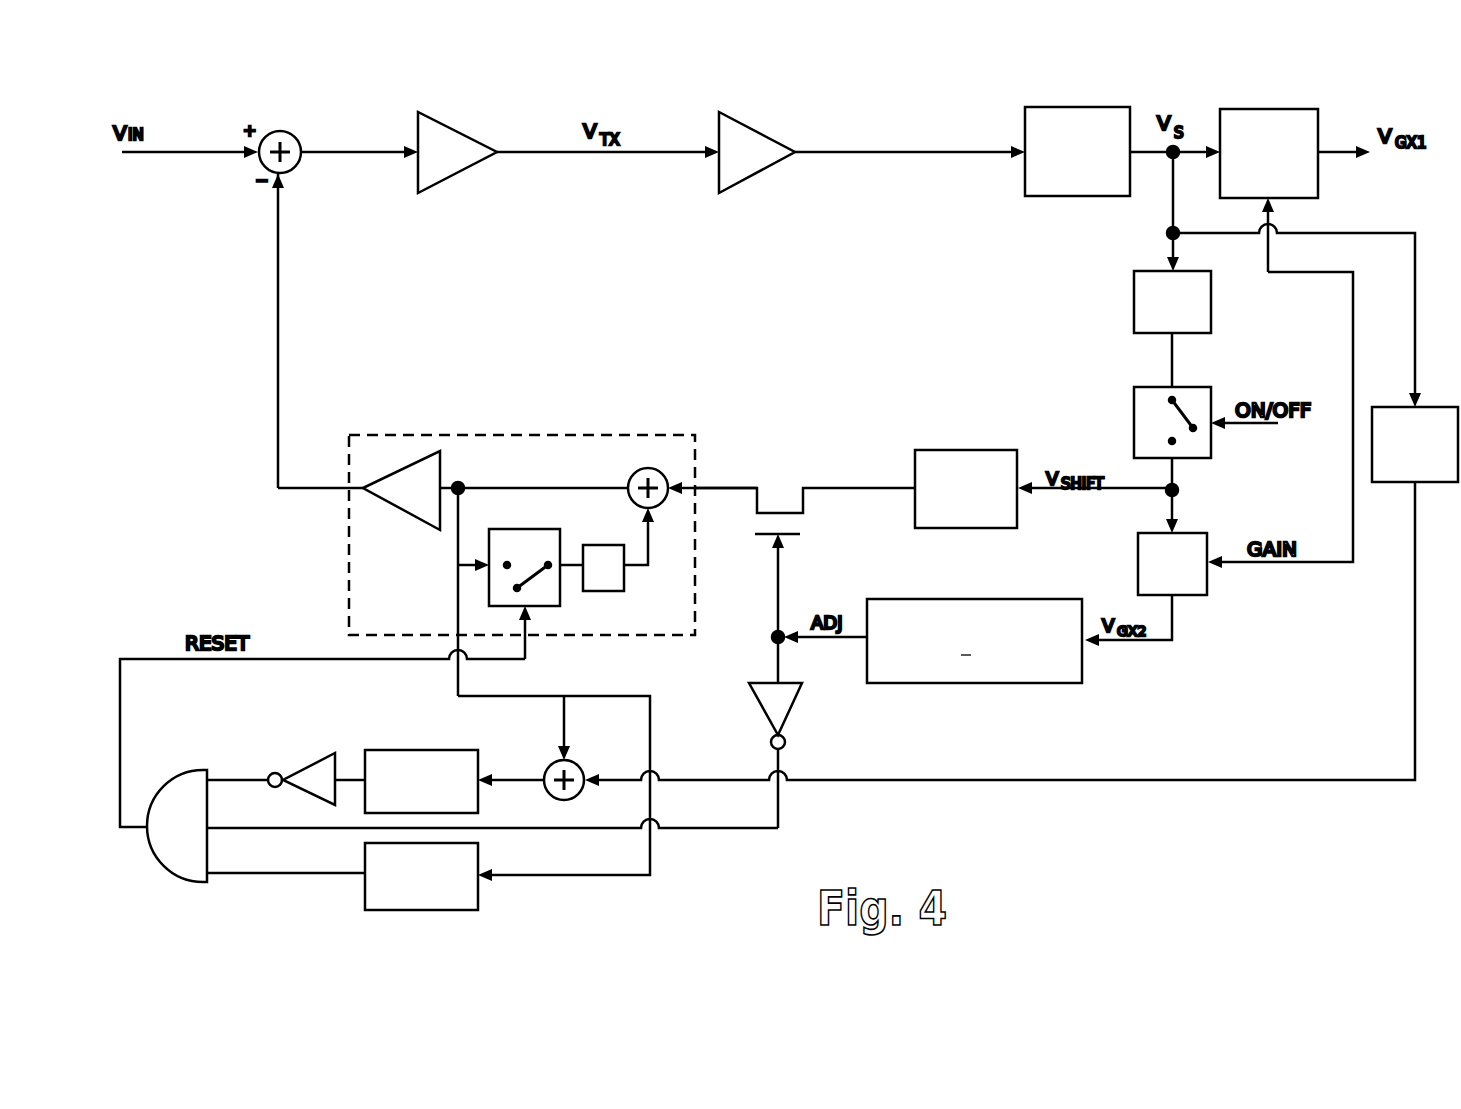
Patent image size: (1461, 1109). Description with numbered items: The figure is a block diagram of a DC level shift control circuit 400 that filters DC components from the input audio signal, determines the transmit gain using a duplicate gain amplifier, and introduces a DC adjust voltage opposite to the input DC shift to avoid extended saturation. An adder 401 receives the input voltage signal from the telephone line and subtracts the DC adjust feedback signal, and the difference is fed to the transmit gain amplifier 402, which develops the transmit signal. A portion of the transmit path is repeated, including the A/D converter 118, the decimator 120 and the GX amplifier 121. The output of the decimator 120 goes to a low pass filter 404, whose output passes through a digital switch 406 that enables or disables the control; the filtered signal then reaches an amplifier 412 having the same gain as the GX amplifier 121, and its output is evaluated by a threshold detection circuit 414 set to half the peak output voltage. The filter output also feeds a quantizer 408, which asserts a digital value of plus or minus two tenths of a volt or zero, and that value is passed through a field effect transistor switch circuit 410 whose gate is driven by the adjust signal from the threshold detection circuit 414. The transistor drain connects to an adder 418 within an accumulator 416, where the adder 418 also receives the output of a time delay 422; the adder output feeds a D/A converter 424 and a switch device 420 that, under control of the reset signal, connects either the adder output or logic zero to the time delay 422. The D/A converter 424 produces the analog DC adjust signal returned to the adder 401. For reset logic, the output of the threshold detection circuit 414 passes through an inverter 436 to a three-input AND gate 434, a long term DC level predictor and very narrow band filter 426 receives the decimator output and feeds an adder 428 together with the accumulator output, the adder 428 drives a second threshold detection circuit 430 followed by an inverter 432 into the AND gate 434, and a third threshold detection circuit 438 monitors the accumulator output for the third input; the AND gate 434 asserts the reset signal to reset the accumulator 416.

The DC level shift control circuit 400 is at (228, 310).
The adder 401 is at (291, 132).
The GTX amplifier 402 is at (459, 132).
The A/D converter 118 is at (758, 132).
The decimator 120 is at (1064, 107).
The GX amplifier 121 is at (1252, 109).
The low pass filter 404 is at (1132, 308).
The digital switch 406 is at (1132, 427).
The quantizer 408 is at (988, 450).
The switch circuit 410 is at (758, 497).
The GX amplifier 412 is at (1136, 572).
The threshold detection circuit TH1 414 is at (1010, 599).
The accumulator 416 is at (513, 434).
The adder 418 is at (637, 472).
The switch device 420 is at (530, 529).
The time delay 422 is at (600, 591).
The D/A converter 424 is at (402, 509).
The long term DC level predictor and very narrow band filter 426 is at (1430, 406).
The adder 428 is at (546, 768).
The threshold detection circuit TH2 430 is at (421, 750).
The inverter 432 is at (314, 768).
The three-input AND logic gate 434 is at (176, 782).
The inverter 436 is at (766, 716).
The threshold detection circuit TH3 438 is at (457, 910).